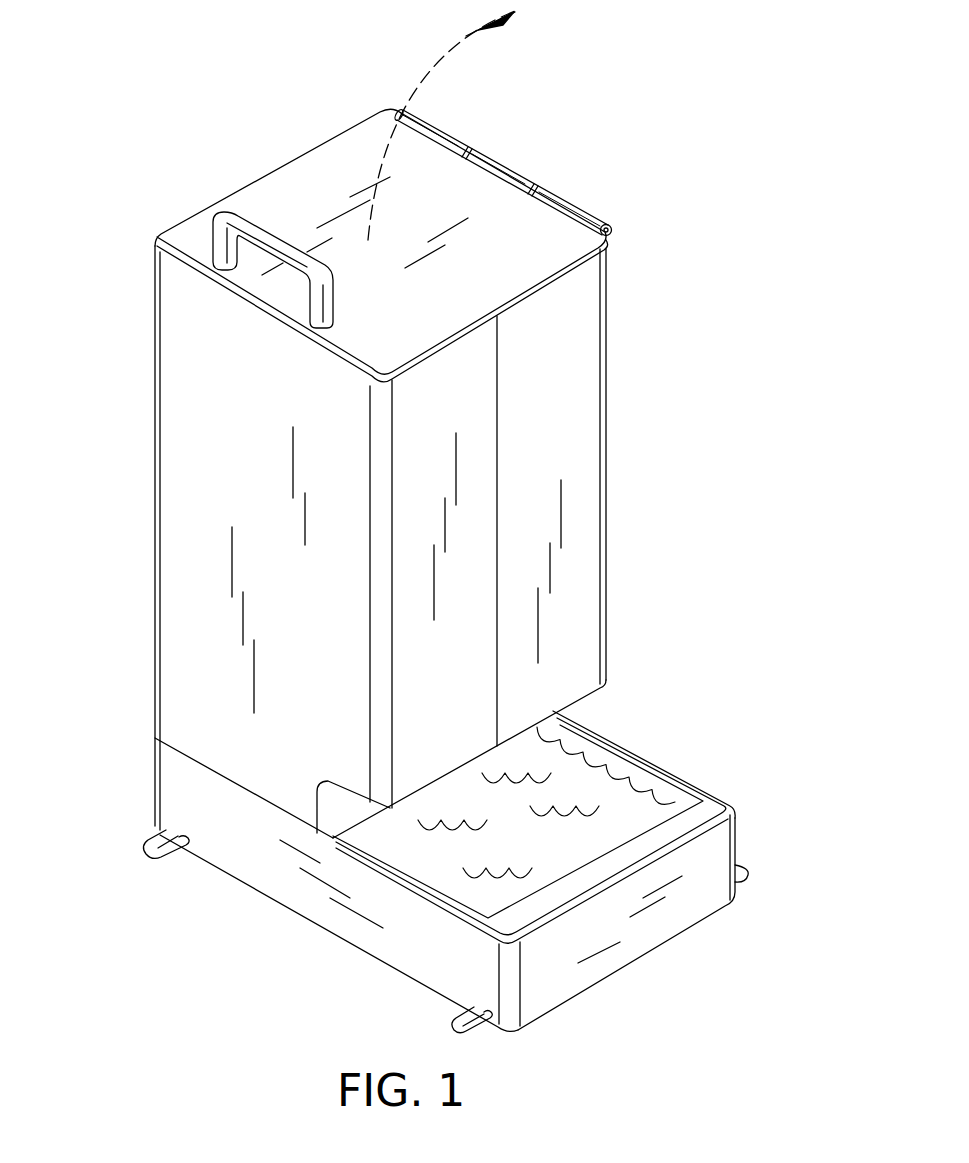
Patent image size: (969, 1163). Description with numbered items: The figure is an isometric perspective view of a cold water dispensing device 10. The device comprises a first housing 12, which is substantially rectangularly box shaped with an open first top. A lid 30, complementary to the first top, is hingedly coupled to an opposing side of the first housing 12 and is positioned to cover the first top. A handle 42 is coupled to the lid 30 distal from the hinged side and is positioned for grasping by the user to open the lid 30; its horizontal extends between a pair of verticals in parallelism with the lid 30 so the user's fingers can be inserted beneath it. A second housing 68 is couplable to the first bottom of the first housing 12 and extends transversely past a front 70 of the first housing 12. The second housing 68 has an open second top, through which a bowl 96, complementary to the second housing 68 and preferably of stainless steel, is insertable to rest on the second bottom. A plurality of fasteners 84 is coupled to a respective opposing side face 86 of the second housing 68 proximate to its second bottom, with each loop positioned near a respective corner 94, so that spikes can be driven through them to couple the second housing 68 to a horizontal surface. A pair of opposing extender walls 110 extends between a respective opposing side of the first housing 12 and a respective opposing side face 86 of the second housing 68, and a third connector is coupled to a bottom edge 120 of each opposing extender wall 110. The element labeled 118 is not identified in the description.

The cold water dispensing device 10 is at (668, 95).
The first housing 12 is at (607, 392).
The lid 30 is at (308, 184).
The handle 42 is at (238, 214).
The front 70 is at (558, 478).
The housing bottom edge 118 is at (588, 705).
The bowl 96 is at (651, 758).
The second housing 68 is at (737, 848).
The opposing side face 86 is at (364, 923).
The bottom edge 120 is at (190, 777).
The opposing extender wall 110 is at (193, 750).
The corner 94 is at (511, 1036).
The fasteners 84 is at (752, 866).